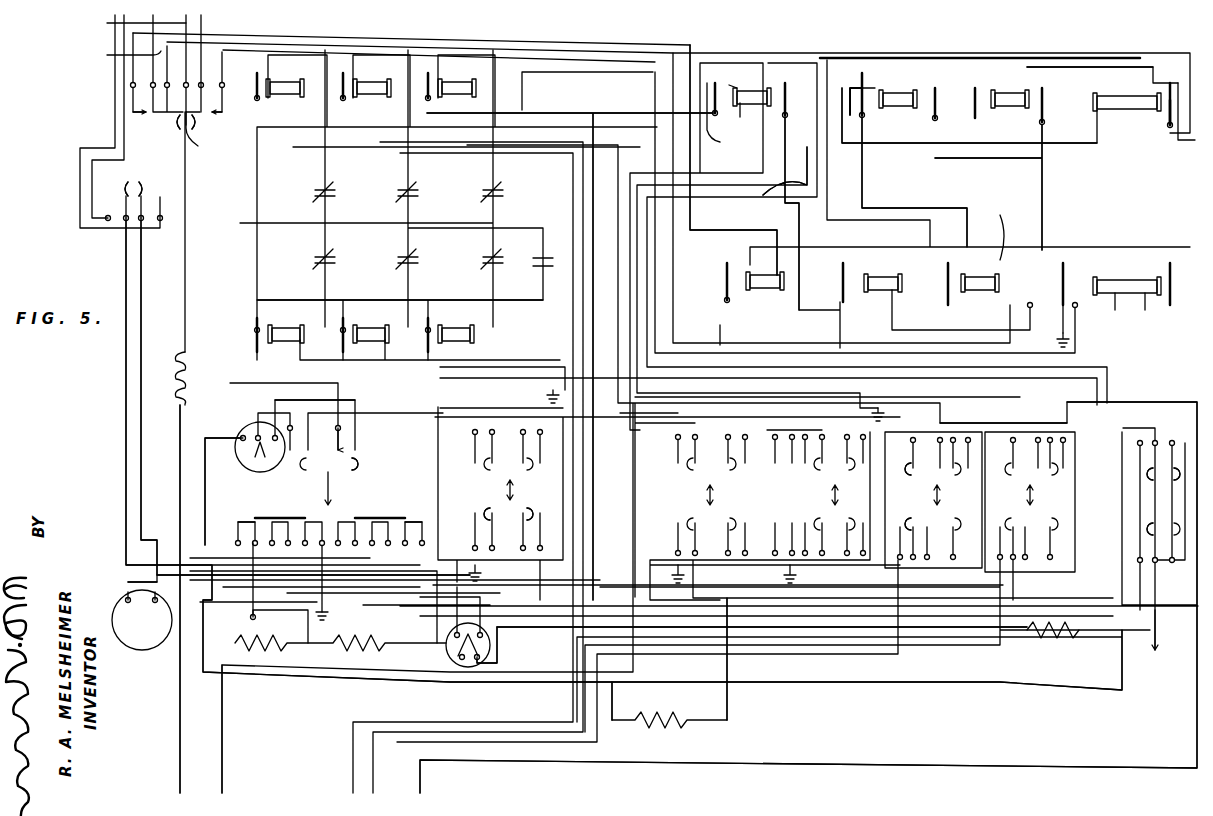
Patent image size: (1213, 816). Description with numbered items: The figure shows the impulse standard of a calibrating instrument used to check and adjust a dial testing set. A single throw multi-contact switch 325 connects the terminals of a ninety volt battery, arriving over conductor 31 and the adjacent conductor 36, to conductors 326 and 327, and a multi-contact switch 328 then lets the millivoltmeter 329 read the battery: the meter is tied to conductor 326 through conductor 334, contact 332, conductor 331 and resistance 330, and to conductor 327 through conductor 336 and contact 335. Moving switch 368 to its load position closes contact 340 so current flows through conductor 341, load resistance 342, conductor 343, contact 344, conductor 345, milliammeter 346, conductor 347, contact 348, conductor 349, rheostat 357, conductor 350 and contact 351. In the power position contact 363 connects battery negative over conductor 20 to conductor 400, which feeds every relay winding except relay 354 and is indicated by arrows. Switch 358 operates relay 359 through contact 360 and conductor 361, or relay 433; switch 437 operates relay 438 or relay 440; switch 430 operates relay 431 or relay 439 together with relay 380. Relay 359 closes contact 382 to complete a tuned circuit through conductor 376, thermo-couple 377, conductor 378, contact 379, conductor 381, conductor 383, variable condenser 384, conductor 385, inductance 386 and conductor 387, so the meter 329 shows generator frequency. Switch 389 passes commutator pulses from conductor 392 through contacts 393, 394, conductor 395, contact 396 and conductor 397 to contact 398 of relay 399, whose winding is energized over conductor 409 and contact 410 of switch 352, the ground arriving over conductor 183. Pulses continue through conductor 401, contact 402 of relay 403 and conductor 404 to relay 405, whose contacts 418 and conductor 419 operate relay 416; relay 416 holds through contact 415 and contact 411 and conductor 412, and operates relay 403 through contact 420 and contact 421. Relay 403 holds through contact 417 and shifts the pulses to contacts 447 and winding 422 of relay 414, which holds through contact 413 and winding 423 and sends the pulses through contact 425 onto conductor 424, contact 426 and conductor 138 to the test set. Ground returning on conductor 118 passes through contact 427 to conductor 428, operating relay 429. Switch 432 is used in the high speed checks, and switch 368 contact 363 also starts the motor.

The conductor 138 is at (128, 23).
The conductor 118 is at (115, 56).
The conductor 183 is at (205, 22).
The conductor 424 is at (307, 38).
The conductor 409 is at (392, 44).
The conductor 428 is at (462, 50).
The normally open contacts of relay 403 447 is at (860, 58).
The conductor 419 is at (1060, 67).
The normally open contacts of relay 405 418 is at (1171, 82).
The normally closed contact of relay 405 421 is at (1180, 57).
The relay 440 is at (280, 80).
The relay 431 is at (367, 80).
The relay 439 is at (452, 80).
The conductor 400 is at (711, 356).
The relay 380 is at (755, 92).
The normally closed contact of relay 380 396 is at (805, 80).
The normally closed contact of relay 403 402 is at (871, 88).
The relay 403 is at (913, 83).
The normally open contact of relay 403 417 is at (928, 87).
The normally open contact of relay 416 420 is at (973, 87).
The normally open contact of relay 416 415 is at (1055, 90).
The relay 416 is at (1015, 110).
The relay 405 is at (1133, 104).
The conductor 36 is at (115, 131).
The contact of switch 352 427 is at (147, 120).
The contact of switch 352 410 is at (185, 130).
The contact of switch 352 426 is at (198, 122).
The switch 352 is at (200, 148).
The conductor 31 is at (118, 116).
The single throw multi-contact switch 325 is at (140, 180).
The conductor 326 is at (120, 250).
The conductor 327 is at (144, 243).
The contact of relay 380 379 is at (704, 120).
The conductor 395 is at (766, 171).
The conductor 404 is at (912, 143).
The conductor 412 is at (1042, 165).
The conductor 381 is at (573, 125).
The conductor 397 is at (785, 203).
The conductor 401 is at (950, 206).
The normally open contact of relay 399 411 is at (1010, 213).
The conductor 385 is at (198, 282).
The inductance 386 is at (198, 362).
The variable condenser 384 is at (393, 258).
The conductor 383 is at (408, 300).
The relay 354 is at (878, 276).
The normally open contact of relay 399 398 is at (950, 280).
The relay 399 is at (972, 274).
The normally open contact of relay 414 425 is at (1070, 277).
The relay 414 is at (1123, 280).
The normally open contact of relay 414 413 is at (1180, 270).
The relay 429 is at (775, 298).
The winding of relay 414 422 is at (1100, 302).
The winding of relay 414 423 is at (1138, 304).
The relay 438 is at (283, 316).
The relay 359 is at (370, 316).
The relay 433 is at (455, 316).
The contact of relay 359 382 is at (351, 353).
The conductor 349 is at (278, 393).
The conductor 347 is at (368, 395).
The contact of switch 328 348 is at (352, 448).
The conductor 345 is at (222, 430).
The milliammeter 346 is at (260, 447).
The multi-contact switch 328 is at (333, 496).
The contact of switch 328 351 is at (252, 508).
The contact of switch 328 344 is at (305, 515).
The contact of switch 328 335 is at (349, 516).
The contact of switch 328 332 is at (415, 508).
The contact of switch 358 360 is at (485, 505).
The switch 358 is at (512, 470).
The conductor 361 is at (556, 508).
The switch 437 is at (710, 478).
The switch 430 is at (837, 478).
The normally closed contacts of switch 389 394 is at (921, 512).
The switch 389 is at (950, 495).
The contact of switch 389 393 is at (965, 428).
The conductor 392 is at (1045, 404).
The switch 432 is at (1030, 478).
The contact of switch 368 340 is at (1150, 480).
The switch 368 is at (1170, 490).
The contact of switch 368 363 is at (1150, 520).
The conductor 334 is at (156, 576).
The conductor 336 is at (128, 590).
The millivoltmeter 329 is at (142, 620).
The conductor 350 is at (234, 587).
The rheostat 357 is at (283, 658).
The thermo-couple 377 is at (448, 650).
The conductor 378 is at (502, 652).
The conductor 331 is at (878, 623).
The resistance 330 is at (1078, 628).
The conductor 343 is at (620, 685).
The conductor 341 is at (720, 695).
The load resistance 342 is at (693, 736).
The conductor 387 is at (175, 738).
The conductor 376 is at (230, 735).
The conductor 20 is at (1148, 643).